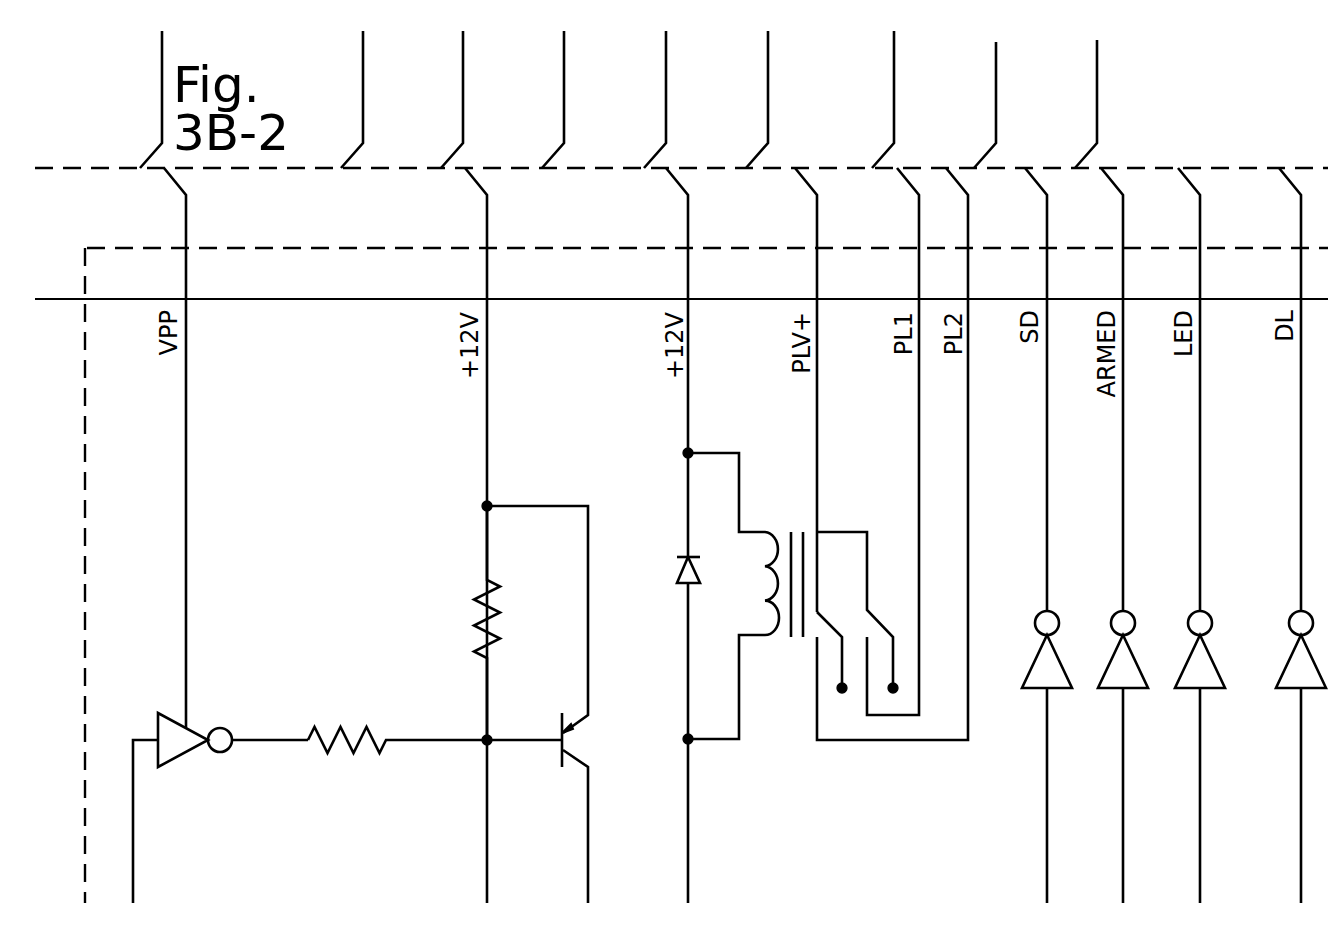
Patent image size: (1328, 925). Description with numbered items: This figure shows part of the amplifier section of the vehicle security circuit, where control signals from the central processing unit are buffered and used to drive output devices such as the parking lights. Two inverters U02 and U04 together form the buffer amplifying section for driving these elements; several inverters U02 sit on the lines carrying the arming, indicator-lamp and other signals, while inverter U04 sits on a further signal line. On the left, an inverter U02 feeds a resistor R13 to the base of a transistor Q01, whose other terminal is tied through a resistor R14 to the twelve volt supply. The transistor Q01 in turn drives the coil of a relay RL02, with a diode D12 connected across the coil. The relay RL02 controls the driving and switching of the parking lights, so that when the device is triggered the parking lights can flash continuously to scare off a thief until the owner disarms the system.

The inverter U02 is at (660, 757).
The inverter U04 is at (1292, 757).
The resistor R13 is at (397, 726).
The resistor R14 is at (469, 623).
The transistor Q01 is at (568, 704).
The diode D12 is at (672, 596).
The relay RL02 is at (793, 596).